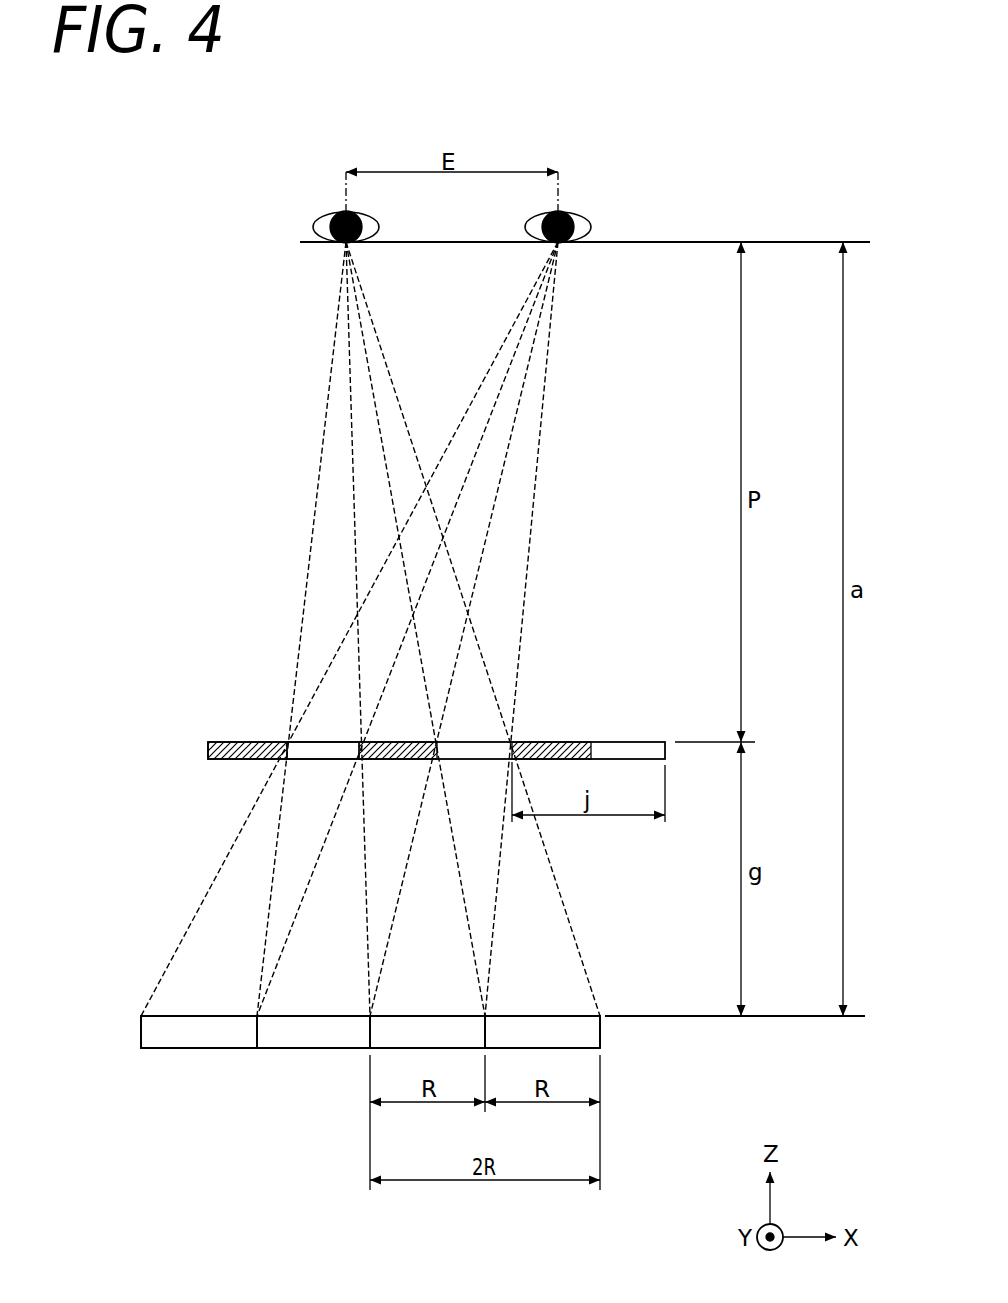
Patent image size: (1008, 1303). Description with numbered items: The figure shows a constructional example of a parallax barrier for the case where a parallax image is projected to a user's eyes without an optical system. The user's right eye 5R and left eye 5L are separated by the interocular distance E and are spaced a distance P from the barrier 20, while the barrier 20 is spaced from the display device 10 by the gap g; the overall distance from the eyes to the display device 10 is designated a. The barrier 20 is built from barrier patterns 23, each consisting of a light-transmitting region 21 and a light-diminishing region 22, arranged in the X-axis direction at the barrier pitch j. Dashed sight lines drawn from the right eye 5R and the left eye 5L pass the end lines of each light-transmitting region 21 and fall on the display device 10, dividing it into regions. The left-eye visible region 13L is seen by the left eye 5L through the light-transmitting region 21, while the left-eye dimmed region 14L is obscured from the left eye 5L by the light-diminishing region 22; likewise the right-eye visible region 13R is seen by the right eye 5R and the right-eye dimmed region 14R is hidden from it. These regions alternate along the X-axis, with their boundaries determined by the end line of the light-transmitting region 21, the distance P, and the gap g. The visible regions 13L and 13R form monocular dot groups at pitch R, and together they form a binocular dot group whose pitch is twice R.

The right eye 5R is at (314, 220).
The left eye 5L is at (591, 220).
The barrier 20 is at (205, 751).
The light-transmitting region 21 is at (320, 759).
The light-diminishing region 22 is at (394, 759).
The barrier pattern 23 is at (412, 803).
The display device 10 is at (138, 1031).
The left-eye visible region 13L is at (204, 1027).
The right-eye dimmed region 14R is at (313, 1005).
The right-eye visible region 13R is at (318, 1027).
The left-eye dimmed region 14L is at (428, 1005).